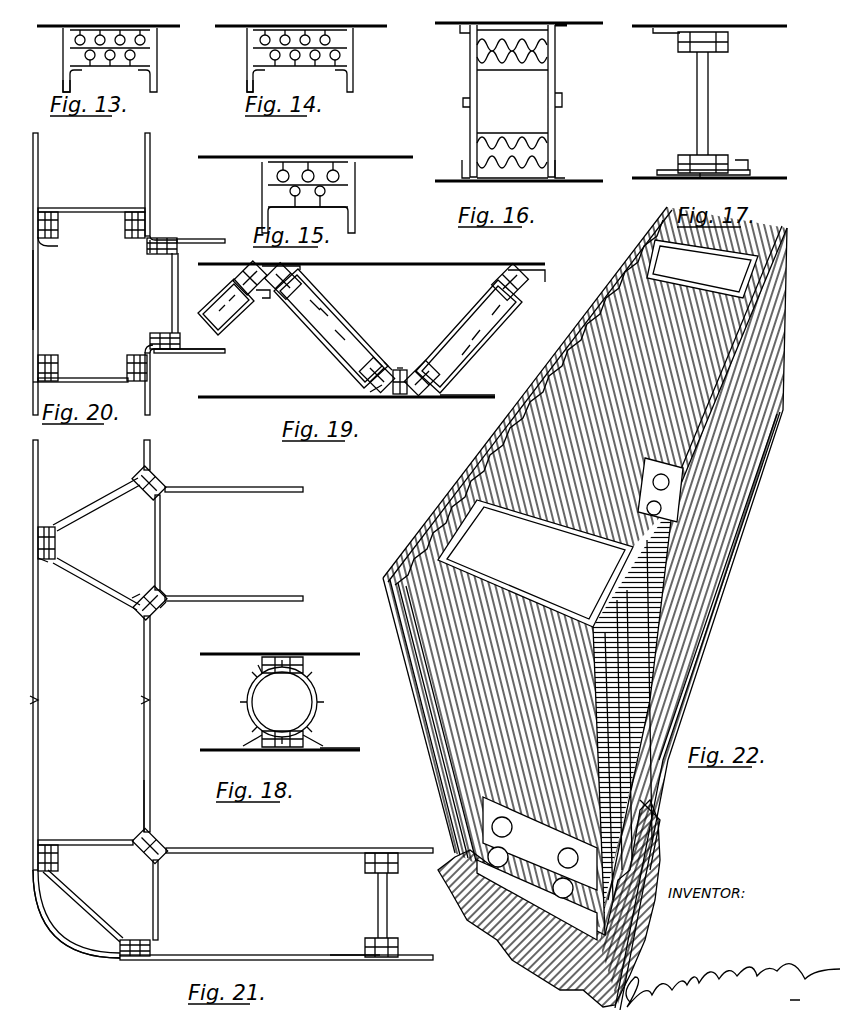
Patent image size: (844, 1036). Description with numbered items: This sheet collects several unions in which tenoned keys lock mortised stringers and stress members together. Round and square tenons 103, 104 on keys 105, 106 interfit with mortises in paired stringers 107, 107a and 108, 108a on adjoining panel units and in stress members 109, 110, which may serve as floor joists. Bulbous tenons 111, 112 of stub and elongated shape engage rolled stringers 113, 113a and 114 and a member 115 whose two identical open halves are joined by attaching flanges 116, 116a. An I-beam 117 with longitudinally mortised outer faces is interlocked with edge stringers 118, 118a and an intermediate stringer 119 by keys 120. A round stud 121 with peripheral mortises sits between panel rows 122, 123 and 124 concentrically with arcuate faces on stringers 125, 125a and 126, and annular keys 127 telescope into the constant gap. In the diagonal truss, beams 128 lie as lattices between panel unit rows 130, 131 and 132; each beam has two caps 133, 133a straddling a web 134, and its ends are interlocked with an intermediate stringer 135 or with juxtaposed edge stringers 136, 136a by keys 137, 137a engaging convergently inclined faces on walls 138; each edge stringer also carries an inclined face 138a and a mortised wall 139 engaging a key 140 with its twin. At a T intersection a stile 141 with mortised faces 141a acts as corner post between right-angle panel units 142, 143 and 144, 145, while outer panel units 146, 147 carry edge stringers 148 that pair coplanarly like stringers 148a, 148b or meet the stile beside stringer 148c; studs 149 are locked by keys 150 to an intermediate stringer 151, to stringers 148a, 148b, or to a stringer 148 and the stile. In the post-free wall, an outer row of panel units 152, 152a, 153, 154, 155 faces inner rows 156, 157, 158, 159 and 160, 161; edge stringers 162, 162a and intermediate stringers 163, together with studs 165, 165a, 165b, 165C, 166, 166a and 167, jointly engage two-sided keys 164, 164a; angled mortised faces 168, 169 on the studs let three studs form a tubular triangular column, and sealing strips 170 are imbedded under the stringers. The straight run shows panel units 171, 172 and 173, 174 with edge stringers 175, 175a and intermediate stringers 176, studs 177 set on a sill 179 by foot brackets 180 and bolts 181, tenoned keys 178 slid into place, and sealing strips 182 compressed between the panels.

In FIG. 13, the round tenon 103 is at (157, 61).
In FIG. 14, the square tenon 104 is at (353, 62).
In FIG. 13, the key 105 is at (152, 48).
In FIG. 14, the key 106 is at (348, 50).
In FIG. 13, the stringer 107 is at (63, 34).
In FIG. 13, the channel member flange 107a is at (157, 32).
In FIG. 14, the stringer 108 is at (250, 33).
In FIG. 14, the channel member flange 108a is at (353, 32).
In FIG. 13, the stress member 109 is at (63, 71).
In FIG. 14, the stress member 110 is at (247, 85).
In FIG. 15, the bulbous tenon 111 is at (355, 196).
In FIG. 16, the bulbous tenon 112 is at (477, 140).
In FIG. 16, the stringer 113 is at (468, 172).
In FIG. 16, the stringer 113a is at (562, 172).
In FIG. 16, the stringer 114 is at (470, 30).
In FIG. 16, the member 115 is at (477, 58).
In FIG. 16, the attaching flange 116 is at (463, 98).
In FIG. 16, the attaching flange 116a is at (562, 100).
In FIG. 17, the I-beam 117 is at (697, 90).
In FIG. 17, the edge stringer 118 is at (678, 165).
In FIG. 17, the edge stringer 118a is at (748, 176).
In FIG. 17, the intermediate stringer 119 is at (672, 33).
In FIG. 17, the key 120 is at (732, 163).
In FIG. 18, the round beam or stud 121 is at (320, 695).
In FIG. 18, the panel row 122 is at (213, 752).
In FIG. 18, the panel row 123 is at (343, 752).
In FIG. 18, the panel row 124 is at (227, 655).
In FIG. 18, the stringer 125 is at (243, 745).
In FIG. 18, the stringer 125a is at (323, 745).
In FIG. 18, the stringer 126 is at (322, 657).
In FIG. 18, the key 127 is at (262, 667).
In FIG. 19, the beam 128 is at (467, 312).
In FIG. 19, the panel unit row 130 is at (257, 400).
In FIG. 19, the panel unit row 131 is at (478, 400).
In FIG. 19, the panel unit row 132 is at (443, 265).
In FIG. 19, the cap 133 is at (300, 282).
In FIG. 19, the lower interlock block 133a is at (377, 357).
In FIG. 19, the channel or web 134 is at (337, 318).
In FIG. 19, the intermediate stringer 135 is at (312, 267).
In FIG. 19, the edge stringer 136 is at (357, 393).
In FIG. 19, the edge stringer 136a is at (447, 393).
In FIG. 19, the tenoned key 137 is at (262, 300).
In FIG. 19, the tenoned key 137a is at (268, 299).
In FIG. 19, the wall 138 is at (266, 268).
In FIG. 19, the inclined face 138a is at (386, 391).
In FIG. 19, the wall 139 is at (393, 394).
In FIG. 19, the tenoned key 140 is at (400, 368).
In FIG. 20, the stile 141 is at (157, 355).
In FIG. 20, the interlock 141a is at (150, 233).
In FIG. 20, the panel unit 142 is at (153, 403).
In FIG. 20, the panel unit 143 is at (212, 356).
In FIG. 20, the panel unit 144 is at (193, 238).
In FIG. 20, the panel unit 145 is at (150, 172).
In FIG. 20, the panel unit 146 is at (37, 283).
In FIG. 20, the panel unit 147 is at (38, 137).
In FIG. 20, the edge stringer 148 is at (140, 385).
In FIG. 20, the edge stringer 148a is at (40, 208).
In FIG. 20, the edge stringer 148b is at (44, 242).
In FIG. 20, the edge stringer 148c is at (180, 343).
In FIG. 20, the stud 149 is at (72, 377).
In FIG. 20, the key 150 is at (43, 352).
In FIG. 20, the intermediate stringer 151 is at (43, 383).
In FIG. 21, the panel unit 152 is at (397, 961).
In FIG. 21, the bottom plate 152a is at (370, 961).
In FIG. 21, the panel unit 153 is at (75, 952).
In FIG. 21, the panel unit 154 is at (40, 745).
In FIG. 21, the panel unit 155 is at (40, 660).
In FIG. 21, the panel unit 156 is at (322, 850).
In FIG. 21, the panel unit 157 is at (150, 780).
In FIG. 21, the panel unit 158 is at (150, 665).
In FIG. 21, the panel unit 159 is at (277, 597).
In FIG. 21, the panel unit 160 is at (265, 486).
In FIG. 21, the panel unit 161 is at (150, 445).
In FIG. 21, the edge stringer 162 is at (138, 617).
In FIG. 21, the edge stringer 162a is at (167, 593).
In FIG. 21, the intermediate stringer 163 is at (42, 563).
In FIG. 21, the key 164 is at (166, 497).
In FIG. 21, the interlock 164a is at (164, 857).
In FIG. 21, the stud 165 is at (100, 597).
In FIG. 21, the stud 165a is at (87, 508).
In FIG. 21, the vertical brace 165b is at (163, 537).
In FIG. 21, the diagonal brace 165C is at (95, 917).
In FIG. 21, the stud 166 is at (103, 839).
In FIG. 21, the vertical member 166a is at (164, 888).
In FIG. 21, the stud 167 is at (375, 903).
In FIG. 21, the mortised face 168 is at (54, 545).
In FIG. 21, the mortised face 169 is at (137, 597).
In FIG. 21, the sealing strip 170 is at (167, 605).
In FIG. 22, the panel unit 171 is at (410, 552).
In FIG. 22, the panel unit 172 is at (650, 240).
In FIG. 22, the panel unit 173 is at (662, 815).
In FIG. 22, the panel unit 174 is at (783, 229).
In FIG. 22, the edge stringer 175 is at (602, 287).
In FIG. 22, the edge stringer 175a is at (665, 222).
In FIG. 22, the intermediate stringer 176 is at (395, 605).
In FIG. 22, the stud 177 is at (577, 615).
In FIG. 22, the tenoned key 178 is at (601, 692).
In FIG. 22, the sill 179 is at (712, 668).
In FIG. 22, the foot bracket 180 is at (560, 838).
In FIG. 22, the bolt 181 is at (552, 878).
In FIG. 22, the sealing strip 182 is at (643, 706).